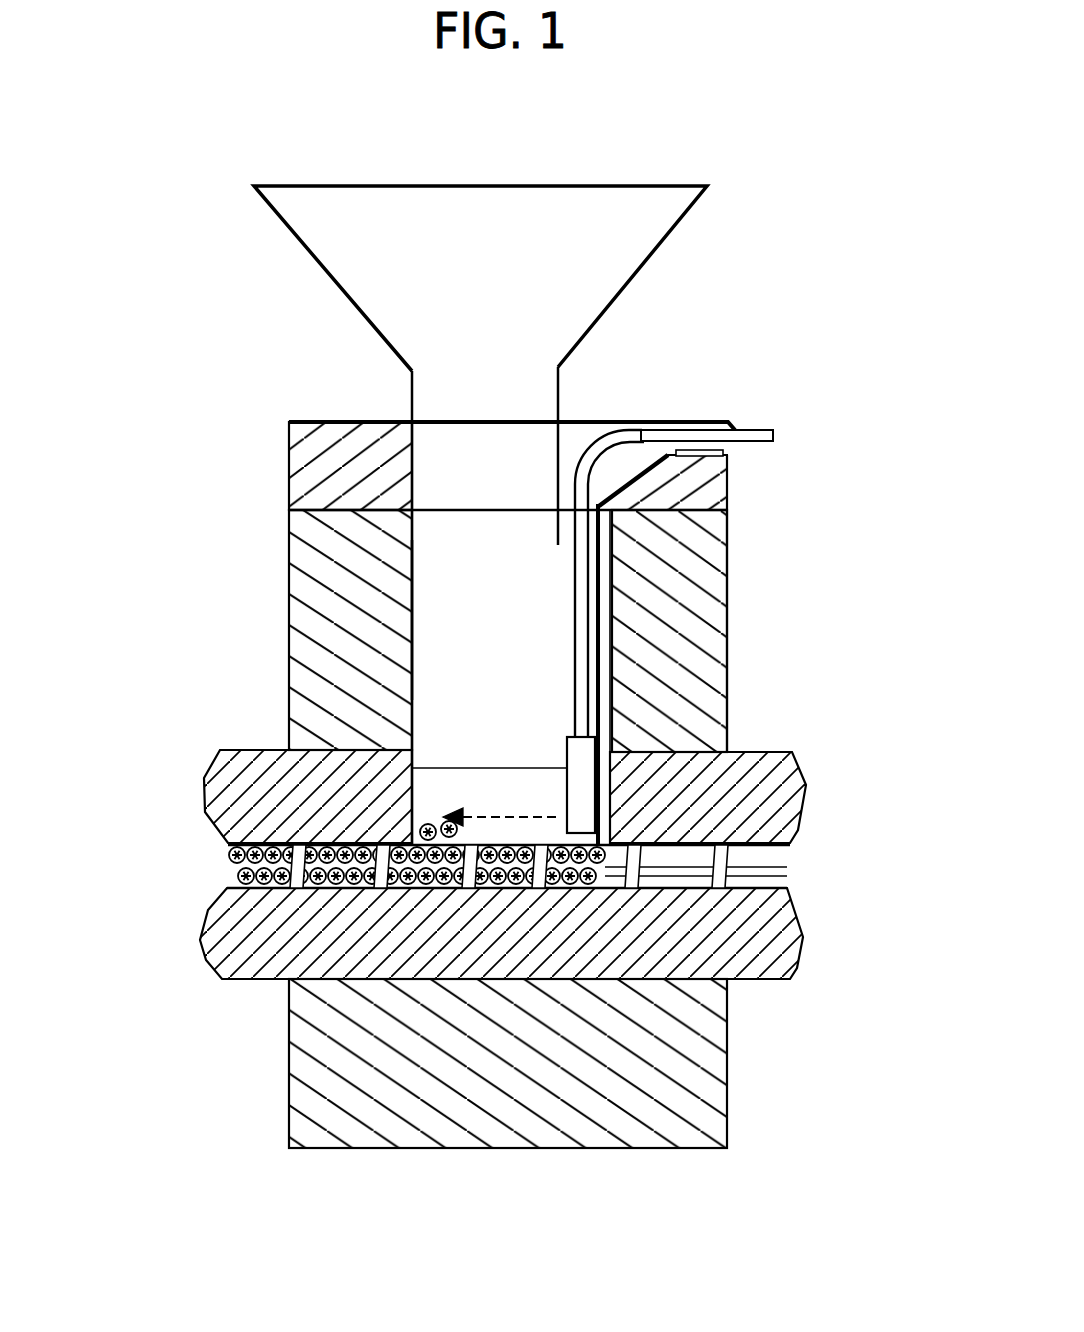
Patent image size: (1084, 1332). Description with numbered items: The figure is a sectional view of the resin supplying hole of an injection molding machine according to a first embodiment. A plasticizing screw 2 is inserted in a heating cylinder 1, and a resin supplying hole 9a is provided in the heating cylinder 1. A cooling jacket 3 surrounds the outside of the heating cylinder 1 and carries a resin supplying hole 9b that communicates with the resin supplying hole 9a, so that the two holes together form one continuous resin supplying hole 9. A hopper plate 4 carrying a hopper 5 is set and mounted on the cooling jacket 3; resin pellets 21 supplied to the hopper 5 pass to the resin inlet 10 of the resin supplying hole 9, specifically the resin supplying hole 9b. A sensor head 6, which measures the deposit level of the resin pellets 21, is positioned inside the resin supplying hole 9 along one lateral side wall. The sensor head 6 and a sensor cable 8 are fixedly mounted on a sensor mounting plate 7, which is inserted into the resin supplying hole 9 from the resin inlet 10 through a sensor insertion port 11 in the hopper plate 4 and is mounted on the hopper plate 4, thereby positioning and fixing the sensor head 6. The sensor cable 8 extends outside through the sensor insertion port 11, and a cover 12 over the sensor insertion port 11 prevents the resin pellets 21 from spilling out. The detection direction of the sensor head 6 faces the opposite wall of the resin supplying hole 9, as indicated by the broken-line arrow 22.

The heating cylinder 1 is at (803, 947).
The plasticizing screw 2 is at (782, 884).
The cooling jacket 3 is at (296, 598).
The hopper plate 4 is at (325, 427).
The hopper 5 is at (600, 186).
The sensor head 6 is at (592, 763).
The sensor mounting plate 7 is at (600, 557).
The sensor cable 8 is at (750, 430).
The resin supplying hole 9 is at (163, 618).
The resin supplying hole 9a is at (417, 797).
The resin supplying hole 9b is at (470, 677).
The resin inlet 10 is at (497, 510).
The sensor insertion port 11 is at (732, 445).
The cover 12 is at (703, 422).
The resin pellets 21 is at (235, 858).
The arrow 22 is at (583, 817).